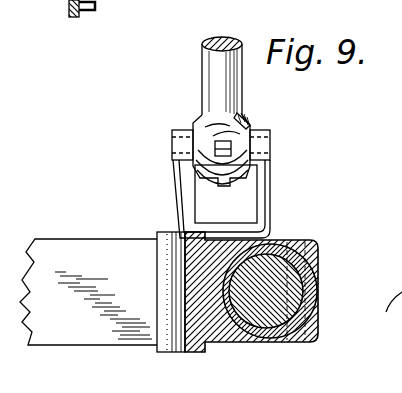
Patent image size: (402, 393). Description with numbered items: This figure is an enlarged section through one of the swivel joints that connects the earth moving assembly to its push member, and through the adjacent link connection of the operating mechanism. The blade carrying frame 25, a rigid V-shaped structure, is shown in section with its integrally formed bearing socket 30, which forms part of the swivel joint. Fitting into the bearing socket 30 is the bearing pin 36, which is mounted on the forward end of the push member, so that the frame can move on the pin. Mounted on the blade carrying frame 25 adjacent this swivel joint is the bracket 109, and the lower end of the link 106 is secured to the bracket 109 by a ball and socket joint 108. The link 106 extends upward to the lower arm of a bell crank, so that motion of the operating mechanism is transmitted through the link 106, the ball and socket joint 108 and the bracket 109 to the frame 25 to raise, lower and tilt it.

The blade carrying frame 25 is at (97, 252).
The bearing socket 30 is at (310, 276).
The bearing pin 36 is at (262, 258).
The link 106 is at (212, 85).
The ball and socket joint 108 is at (238, 133).
The bracket 109 is at (260, 186).